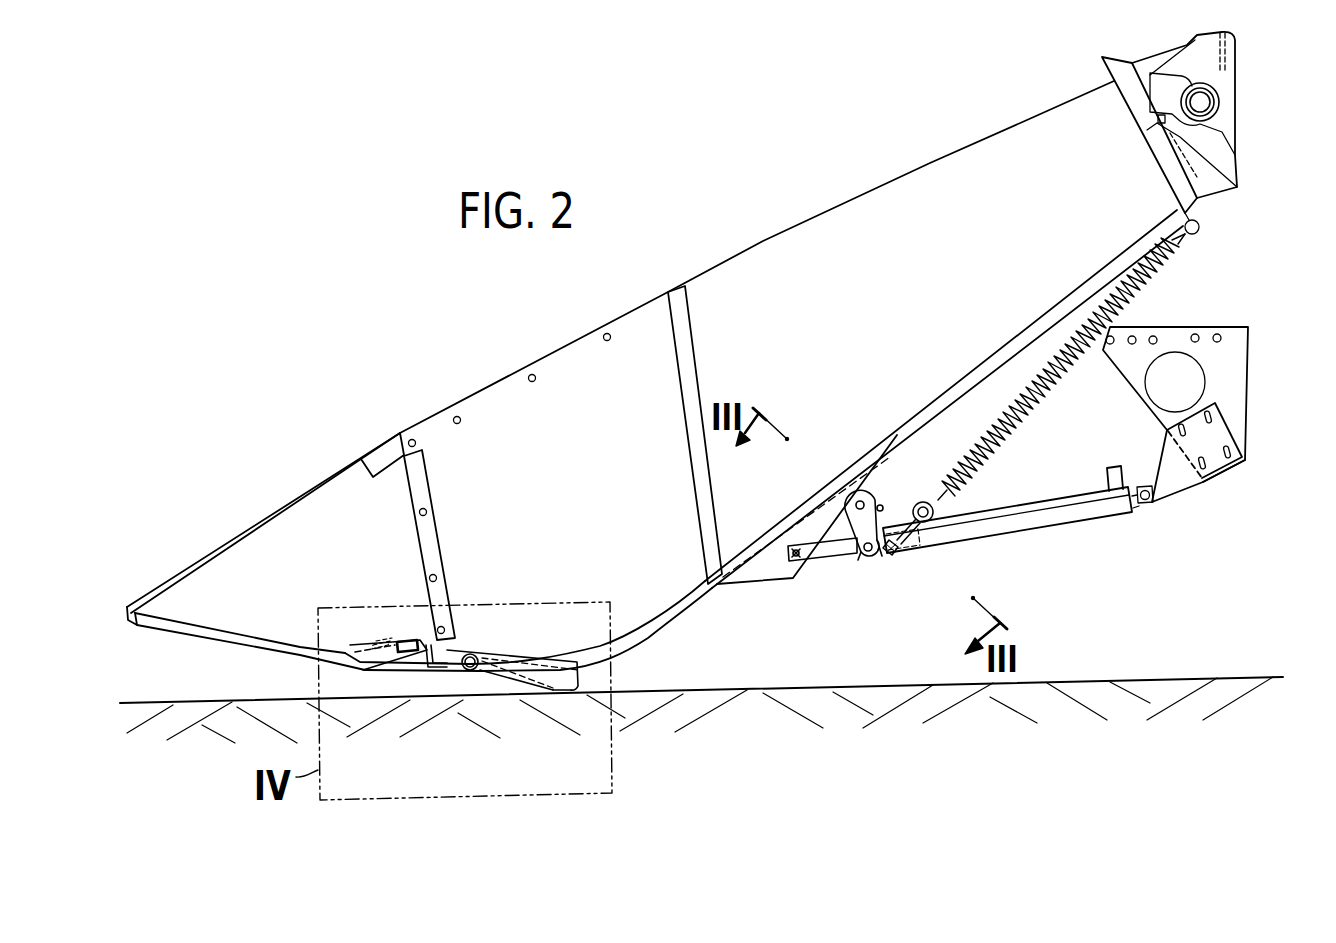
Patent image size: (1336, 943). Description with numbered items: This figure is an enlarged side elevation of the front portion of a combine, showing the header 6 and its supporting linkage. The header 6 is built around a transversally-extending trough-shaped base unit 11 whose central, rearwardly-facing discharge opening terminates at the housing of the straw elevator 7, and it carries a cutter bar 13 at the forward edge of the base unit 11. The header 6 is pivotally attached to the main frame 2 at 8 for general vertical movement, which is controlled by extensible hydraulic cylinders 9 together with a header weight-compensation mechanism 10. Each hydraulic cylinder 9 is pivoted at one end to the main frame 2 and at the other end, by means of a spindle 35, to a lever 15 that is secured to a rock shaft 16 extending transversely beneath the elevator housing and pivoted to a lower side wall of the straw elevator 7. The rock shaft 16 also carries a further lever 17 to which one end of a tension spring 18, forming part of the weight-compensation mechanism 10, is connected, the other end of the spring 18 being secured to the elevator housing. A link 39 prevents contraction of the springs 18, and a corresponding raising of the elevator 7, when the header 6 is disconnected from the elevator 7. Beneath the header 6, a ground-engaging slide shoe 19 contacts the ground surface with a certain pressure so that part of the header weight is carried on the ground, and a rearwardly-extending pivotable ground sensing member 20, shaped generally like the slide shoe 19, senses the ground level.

The main frame 2 is at (1237, 182).
The header 6 is at (542, 346).
The straw elevator 7 is at (764, 241).
The pivot 8 is at (1220, 101).
The hydraulic cylinders 9 is at (1047, 527).
The header weight-compensation mechanism 10 is at (1160, 299).
The base unit 11 is at (655, 638).
The cutter bar 13 is at (350, 652).
The levers 15 is at (852, 558).
The rock shaft 16 is at (856, 505).
The further levers 17 is at (881, 505).
The tension springs 18 is at (1012, 438).
The slide shoes 19 is at (585, 686).
The ground sensing members 20 is at (500, 676).
The spindles 35 is at (890, 562).
The link 39 is at (832, 560).